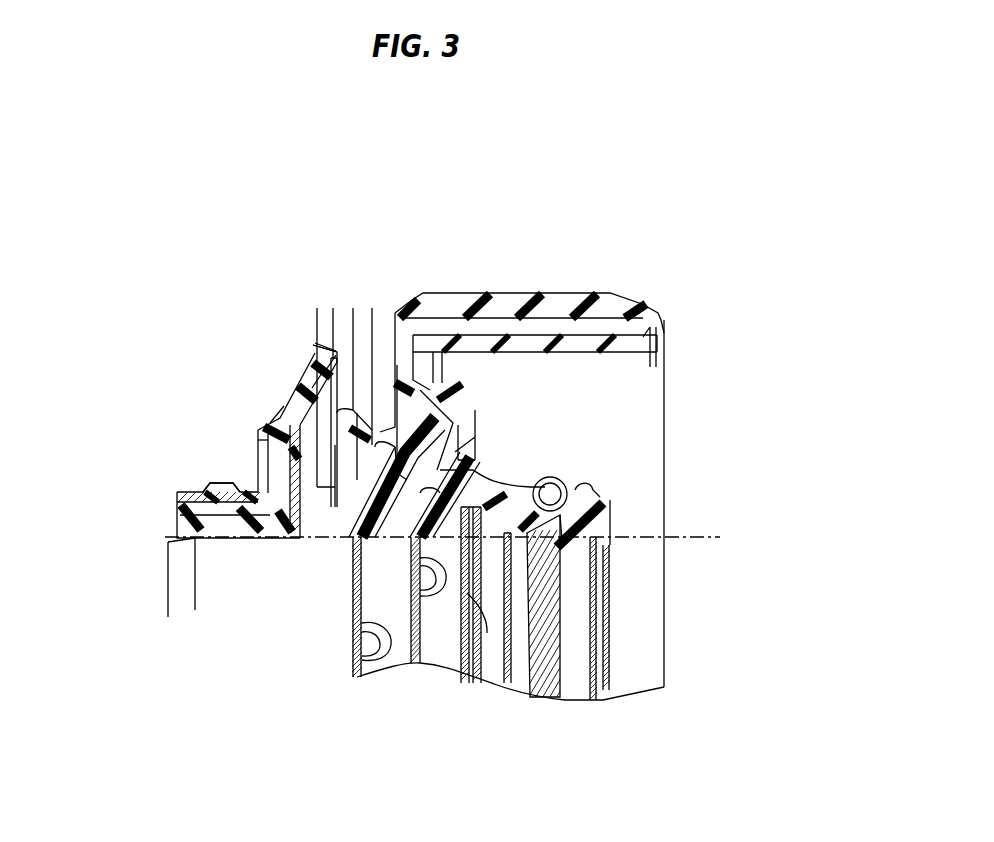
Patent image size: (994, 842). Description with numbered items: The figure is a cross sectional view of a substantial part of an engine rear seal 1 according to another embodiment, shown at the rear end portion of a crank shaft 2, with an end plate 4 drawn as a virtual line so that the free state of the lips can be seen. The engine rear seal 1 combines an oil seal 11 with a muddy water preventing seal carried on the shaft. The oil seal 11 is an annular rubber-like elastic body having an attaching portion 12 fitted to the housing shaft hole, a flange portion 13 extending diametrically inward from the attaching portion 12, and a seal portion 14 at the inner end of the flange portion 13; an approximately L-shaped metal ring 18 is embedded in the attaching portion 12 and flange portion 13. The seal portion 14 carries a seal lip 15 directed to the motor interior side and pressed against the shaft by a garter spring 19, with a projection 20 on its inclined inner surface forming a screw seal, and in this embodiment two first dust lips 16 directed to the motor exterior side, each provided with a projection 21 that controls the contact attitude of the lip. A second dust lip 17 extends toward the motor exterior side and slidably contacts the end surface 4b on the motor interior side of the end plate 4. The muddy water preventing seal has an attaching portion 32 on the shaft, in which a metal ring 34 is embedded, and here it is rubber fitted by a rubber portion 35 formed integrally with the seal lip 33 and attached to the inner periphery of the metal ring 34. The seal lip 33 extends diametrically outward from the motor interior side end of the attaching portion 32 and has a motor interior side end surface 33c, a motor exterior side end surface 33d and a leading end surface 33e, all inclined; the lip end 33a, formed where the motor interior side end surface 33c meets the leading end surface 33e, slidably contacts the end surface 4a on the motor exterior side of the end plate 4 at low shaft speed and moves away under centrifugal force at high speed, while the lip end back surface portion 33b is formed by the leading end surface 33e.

The engine rear seal 1 is at (648, 298).
The crank shaft 2 is at (677, 545).
The end plate 4 is at (317, 320).
The end surface in the motor exterior side of the end plate 4a is at (337, 350).
The end surface in the motor interior side of the end plate 4b is at (362, 317).
The oil seal 11 is at (648, 387).
The attaching portion 12 is at (550, 297).
The flange portion 13 is at (473, 403).
The seal portion 14 is at (487, 633).
The seal lip 15 is at (573, 550).
The first dust lip 16 is at (417, 565).
The second dust lip 17 is at (355, 513).
The metal ring 18 is at (505, 295).
The garter spring 19 is at (553, 477).
The projection 20 is at (530, 685).
The projection 21 is at (438, 597).
The attaching portion 32 is at (197, 593).
The seal lip 33 is at (288, 383).
The lip end 33a is at (331, 347).
The lip end back surface portion 33b is at (318, 348).
The motor interior side end surface 33c is at (258, 438).
The motor exterior side end surface 33d is at (280, 395).
The leading end surface 33e is at (313, 352).
The metal ring 34 is at (217, 537).
The rubber portion 35 is at (270, 542).